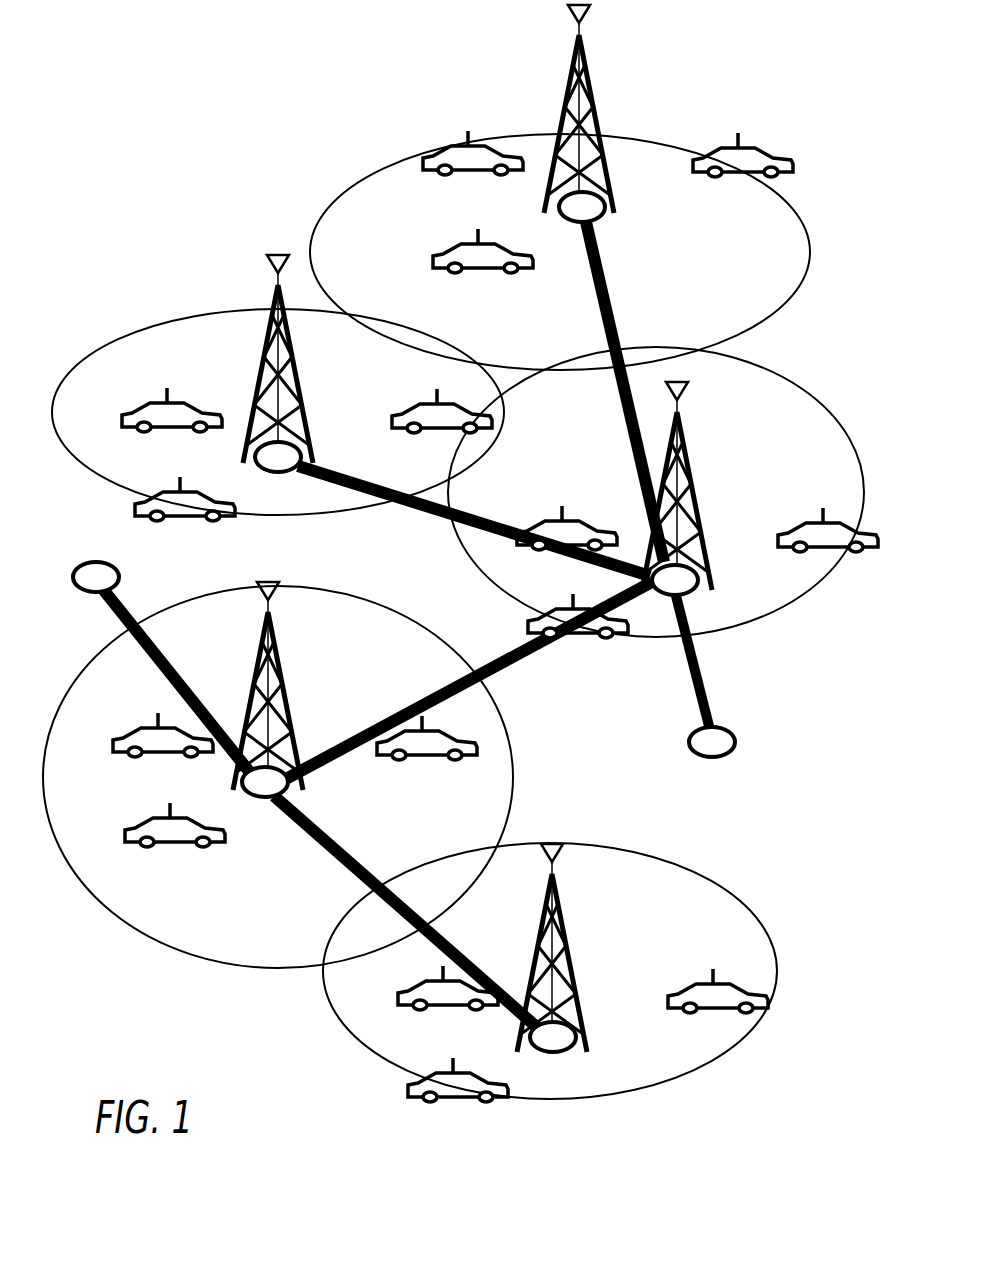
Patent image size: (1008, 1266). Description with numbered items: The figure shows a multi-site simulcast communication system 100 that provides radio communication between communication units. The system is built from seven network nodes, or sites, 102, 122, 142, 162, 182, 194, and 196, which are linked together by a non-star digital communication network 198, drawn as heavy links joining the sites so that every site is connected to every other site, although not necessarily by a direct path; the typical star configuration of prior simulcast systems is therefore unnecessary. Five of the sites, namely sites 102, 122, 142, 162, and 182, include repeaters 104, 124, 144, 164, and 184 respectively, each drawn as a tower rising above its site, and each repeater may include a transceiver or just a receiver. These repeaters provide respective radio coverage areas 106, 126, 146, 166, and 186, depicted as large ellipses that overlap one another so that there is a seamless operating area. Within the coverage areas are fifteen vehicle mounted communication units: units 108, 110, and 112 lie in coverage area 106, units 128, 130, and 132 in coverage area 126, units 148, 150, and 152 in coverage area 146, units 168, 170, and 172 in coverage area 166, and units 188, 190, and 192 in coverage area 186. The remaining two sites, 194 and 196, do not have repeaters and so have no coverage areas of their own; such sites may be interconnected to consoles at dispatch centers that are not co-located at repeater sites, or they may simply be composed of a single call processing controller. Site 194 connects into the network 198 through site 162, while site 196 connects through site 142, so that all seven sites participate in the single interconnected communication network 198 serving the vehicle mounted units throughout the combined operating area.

The multi-site simulcast communication system 100 is at (150, 108).
The network node 102 is at (600, 212).
The repeater 104 is at (575, 68).
The coverage area 106 is at (378, 173).
The vehicle mounted communication unit 108 is at (460, 145).
The vehicle mounted communication unit 110 is at (465, 240).
The vehicle mounted communication unit 112 is at (740, 145).
The network node 122 is at (270, 473).
The repeater 124 is at (270, 325).
The coverage area 126 is at (103, 347).
The vehicle mounted communication unit 128 is at (140, 407).
The vehicle mounted communication unit 130 is at (160, 492).
The vehicle mounted communication unit 132 is at (437, 397).
The network node 142 is at (692, 585).
The repeater 144 is at (680, 432).
The coverage area 146 is at (457, 568).
The vehicle mounted communication unit 148 is at (560, 508).
The vehicle mounted communication unit 150 is at (553, 607).
The vehicle mounted communication unit 152 is at (823, 513).
The network node 162 is at (293, 790).
The repeater 164 is at (258, 647).
The coverage area 166 is at (63, 697).
The vehicle mounted communication unit 168 is at (137, 730).
The vehicle mounted communication unit 170 is at (155, 813).
The vehicle mounted communication unit 172 is at (423, 757).
The network node 182 is at (573, 1045).
The repeater 184 is at (543, 913).
The coverage area 186 is at (340, 1025).
The vehicle mounted communication unit 188 is at (442, 1005).
The vehicle mounted communication unit 190 is at (455, 1093).
The vehicle mounted communication unit 192 is at (705, 977).
The network node 194 is at (83, 563).
The network node 196 is at (693, 730).
The non-star digital communication network 198 is at (520, 660).